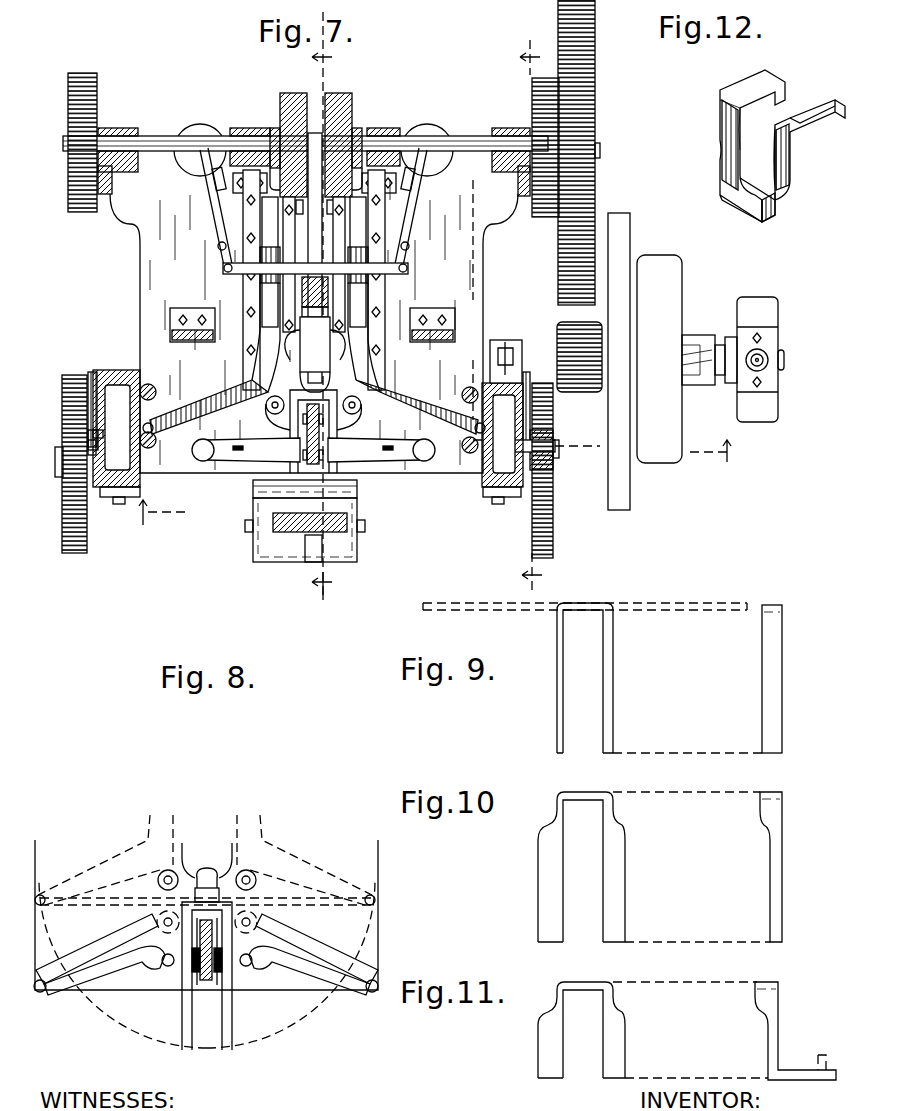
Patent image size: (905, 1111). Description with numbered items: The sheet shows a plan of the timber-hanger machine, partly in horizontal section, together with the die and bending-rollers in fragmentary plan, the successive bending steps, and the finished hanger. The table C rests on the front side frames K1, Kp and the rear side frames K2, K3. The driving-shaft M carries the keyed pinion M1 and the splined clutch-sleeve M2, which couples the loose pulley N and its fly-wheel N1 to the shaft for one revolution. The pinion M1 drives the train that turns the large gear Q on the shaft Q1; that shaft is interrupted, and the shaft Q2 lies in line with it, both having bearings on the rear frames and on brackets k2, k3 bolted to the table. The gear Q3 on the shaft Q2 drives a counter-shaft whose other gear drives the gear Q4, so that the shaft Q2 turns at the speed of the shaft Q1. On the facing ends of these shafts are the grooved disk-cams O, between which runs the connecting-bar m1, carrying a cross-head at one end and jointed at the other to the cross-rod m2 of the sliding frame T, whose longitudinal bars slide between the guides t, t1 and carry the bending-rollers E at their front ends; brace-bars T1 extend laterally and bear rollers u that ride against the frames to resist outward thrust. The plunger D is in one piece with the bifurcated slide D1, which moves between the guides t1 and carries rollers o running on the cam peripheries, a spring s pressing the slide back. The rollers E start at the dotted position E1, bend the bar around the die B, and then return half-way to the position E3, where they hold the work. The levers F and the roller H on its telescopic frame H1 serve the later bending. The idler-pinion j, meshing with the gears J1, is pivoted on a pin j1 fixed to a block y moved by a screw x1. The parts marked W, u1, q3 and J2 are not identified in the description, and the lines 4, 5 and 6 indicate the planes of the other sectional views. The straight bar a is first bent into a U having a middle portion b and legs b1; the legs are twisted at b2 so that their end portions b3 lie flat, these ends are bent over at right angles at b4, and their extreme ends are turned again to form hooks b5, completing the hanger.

In FIG. 7, the table C is at (185, 512).
In FIG. 8, the table C is at (206, 931).
In FIG. 7, the cam W is at (200, 126).
In FIG. 7, the shaft Q2 is at (190, 136).
In FIG. 7, the shaft Q1 is at (490, 138).
In FIG. 7, the gear Q4 is at (97, 85).
In FIG. 7, the gear Q3 is at (531, 110).
In FIG. 7, the gear Q is at (595, 110).
In FIG. 7, the rear side frame K3 is at (116, 180).
In FIG. 7, the rear side frame K2 is at (460, 235).
In FIG. 7, the disk-cam O is at (282, 108).
In FIG. 7, the connecting-bar m1 is at (317, 258).
In FIG. 7, the roller o is at (315, 207).
In FIG. 7, the bracket k3 is at (232, 185).
In FIG. 7, the bracket k2 is at (385, 182).
In FIG. 7, the cleat or guide t is at (314, 280).
In FIG. 7, the cleat or guide t1 is at (314, 264).
In FIG. 7, the sliding frame T is at (317, 319).
In FIG. 7, the brace-bar T1 is at (314, 407).
In FIG. 7, the roller u is at (314, 425).
In FIG. 7, the connecting rod u1 is at (210, 202).
In FIG. 7, the cross-rod m2 is at (324, 269).
In FIG. 7, the spring s is at (320, 297).
In FIG. 7, the slide D1 is at (315, 344).
In FIG. 7, the plunger D is at (319, 377).
In FIG. 8, the plunger D is at (201, 877).
In FIG. 7, the die B is at (313, 431).
In FIG. 8, the die B is at (207, 985).
In FIG. 7, the bending-roller E is at (308, 413).
In FIG. 8, the bending-roller E is at (206, 970).
In FIG. 7, the lever F is at (313, 450).
In FIG. 7, the guide block q3 is at (312, 333).
In FIG. 7, the front side frame K1 is at (118, 376).
In FIG. 7, the block y is at (520, 455).
In FIG. 7, the screw x1 is at (308, 402).
In FIG. 7, the gear J2 is at (87, 543).
In FIG. 7, the idler-pinion j is at (62, 433).
In FIG. 7, the pin j1 is at (56, 452).
In FIG. 7, the front side frame Kp is at (518, 402).
In FIG. 7, the gear J1 is at (553, 520).
In FIG. 7, the pinion M1 is at (590, 392).
In FIG. 7, the roller H is at (358, 488).
In FIG. 7, the frame H1 is at (305, 530).
In FIG. 7, the fly-wheel N1 is at (630, 223).
In FIG. 7, the pulley N is at (659, 359).
In FIG. 7, the clutch-sleeve M2 is at (709, 350).
In FIG. 7, the driving-shaft M is at (784, 361).
In FIG. 7, the section line 5 is at (435, 482).
In FIG. 7, the section line 6 is at (324, 321).
In FIG. 7, the section line 4 is at (531, 314).
In FIG. 7, the straight bar a is at (481, 586).
In FIG. 8, the straight bar a is at (89, 913).
In FIG. 9, the straight bar a is at (592, 668).
In FIG. 8, the initial position of bending-rollers E1 is at (209, 869).
In FIG. 8, the half-way position of bending-rollers E3 is at (207, 944).
In FIG. 9, the middle portion b is at (791, 613).
In FIG. 10, the middle portion b is at (660, 867).
In FIG. 11, the middle portion b is at (687, 1022).
In FIG. 12, the middle portion b is at (734, 220).
In FIG. 9, the leg b1 is at (558, 690).
In FIG. 10, the leg b1 is at (560, 812).
In FIG. 11, the leg b1 is at (612, 998).
In FIG. 10, the twist b2 is at (550, 830).
In FIG. 11, the twist b2 is at (622, 1020).
In FIG. 10, the flattened end portion b3 is at (788, 908).
In FIG. 11, the flattened end portion b3 is at (767, 1058).
In FIG. 11, the right-angle bend b4 is at (820, 1080).
In FIG. 11, the hook b5 is at (828, 1060).